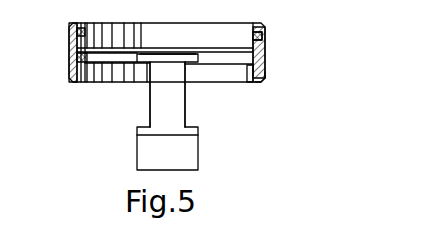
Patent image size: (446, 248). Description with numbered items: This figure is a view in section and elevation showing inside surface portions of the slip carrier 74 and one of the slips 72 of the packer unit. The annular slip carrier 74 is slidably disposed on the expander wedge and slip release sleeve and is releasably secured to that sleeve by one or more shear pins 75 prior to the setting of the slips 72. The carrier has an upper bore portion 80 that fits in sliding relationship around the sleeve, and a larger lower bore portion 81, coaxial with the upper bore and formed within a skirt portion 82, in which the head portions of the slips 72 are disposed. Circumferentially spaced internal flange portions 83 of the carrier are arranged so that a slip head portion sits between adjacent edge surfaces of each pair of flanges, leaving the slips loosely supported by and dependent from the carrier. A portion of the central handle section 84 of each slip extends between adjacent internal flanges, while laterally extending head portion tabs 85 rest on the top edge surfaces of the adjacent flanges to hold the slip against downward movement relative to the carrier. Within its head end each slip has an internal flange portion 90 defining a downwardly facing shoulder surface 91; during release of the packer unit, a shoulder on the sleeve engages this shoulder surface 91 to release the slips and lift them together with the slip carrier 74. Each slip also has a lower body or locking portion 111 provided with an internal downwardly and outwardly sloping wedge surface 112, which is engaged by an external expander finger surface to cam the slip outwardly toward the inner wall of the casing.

The slips 72 is at (186, 110).
The slip carrier 74 is at (264, 50).
The shear pins 75 is at (267, 34).
The upper bore portion 80 is at (244, 31).
The lower bore portion 81 is at (254, 60).
The skirt portion 82 is at (267, 77).
The internal flange portions 83 is at (95, 80).
The central handle section 84 is at (170, 92).
The head portion tabs 85 is at (143, 47).
The internal flange portion 90 is at (175, 60).
The shoulder surface 91 is at (160, 65).
The lower body portion 111 is at (198, 153).
The wedge surface 112 is at (155, 147).